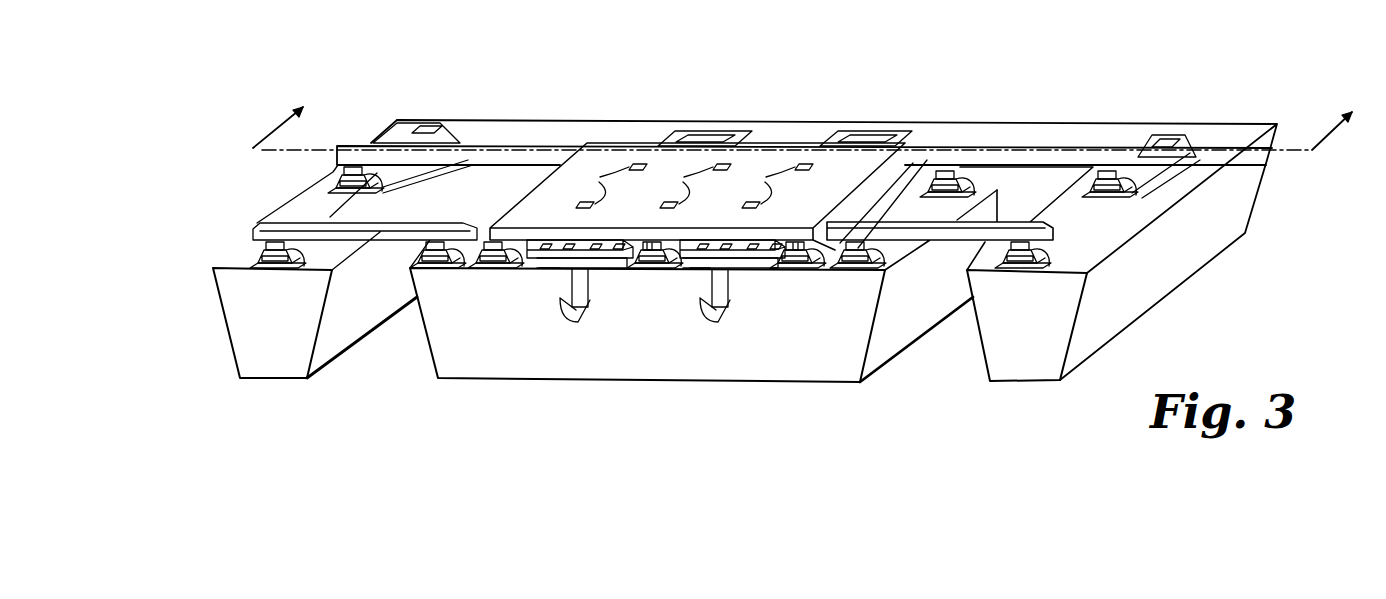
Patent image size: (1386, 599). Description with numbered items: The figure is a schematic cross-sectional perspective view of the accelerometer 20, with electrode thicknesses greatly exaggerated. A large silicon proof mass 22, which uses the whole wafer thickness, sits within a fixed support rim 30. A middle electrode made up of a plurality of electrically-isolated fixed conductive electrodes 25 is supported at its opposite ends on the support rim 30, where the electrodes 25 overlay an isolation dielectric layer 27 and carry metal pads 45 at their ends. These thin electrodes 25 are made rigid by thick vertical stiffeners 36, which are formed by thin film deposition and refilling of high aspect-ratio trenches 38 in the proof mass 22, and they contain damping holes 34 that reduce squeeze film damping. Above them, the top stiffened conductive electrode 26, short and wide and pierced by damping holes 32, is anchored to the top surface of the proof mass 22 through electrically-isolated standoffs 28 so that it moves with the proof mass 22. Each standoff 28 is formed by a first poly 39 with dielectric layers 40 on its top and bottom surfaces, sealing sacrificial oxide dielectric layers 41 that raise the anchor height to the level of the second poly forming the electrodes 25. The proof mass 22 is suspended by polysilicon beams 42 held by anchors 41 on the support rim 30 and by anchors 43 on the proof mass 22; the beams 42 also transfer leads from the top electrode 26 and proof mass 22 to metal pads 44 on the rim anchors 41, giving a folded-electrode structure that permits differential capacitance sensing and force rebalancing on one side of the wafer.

The accelerometer 20 is at (1144, 57).
The proof mass 22 is at (985, 310).
The fixed conductive electrodes 25 is at (693, 262).
The top stiffened conductive electrode 26 is at (885, 157).
The isolation dielectric layer 27 is at (790, 137).
The standoffs 28 is at (778, 280).
The support rim 30 is at (1140, 287).
The damping holes 32 is at (694, 186).
The damping holes 34 is at (562, 272).
The vertical stiffeners 36 is at (742, 303).
The high aspect-ratio trenches 38 is at (732, 292).
The first poly 39 is at (925, 178).
The dielectric layers 40 is at (493, 248).
The sacrificial oxide dielectric layers / anchors 41 is at (557, 163).
The polysilicon beams 42 is at (462, 160).
The anchors 43 is at (510, 176).
The metal pads 44 is at (1163, 137).
The metal pads 45 is at (847, 140).